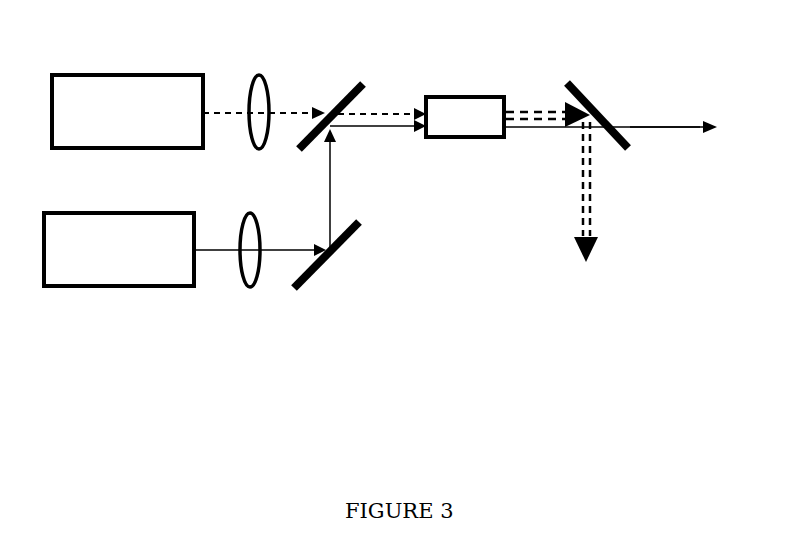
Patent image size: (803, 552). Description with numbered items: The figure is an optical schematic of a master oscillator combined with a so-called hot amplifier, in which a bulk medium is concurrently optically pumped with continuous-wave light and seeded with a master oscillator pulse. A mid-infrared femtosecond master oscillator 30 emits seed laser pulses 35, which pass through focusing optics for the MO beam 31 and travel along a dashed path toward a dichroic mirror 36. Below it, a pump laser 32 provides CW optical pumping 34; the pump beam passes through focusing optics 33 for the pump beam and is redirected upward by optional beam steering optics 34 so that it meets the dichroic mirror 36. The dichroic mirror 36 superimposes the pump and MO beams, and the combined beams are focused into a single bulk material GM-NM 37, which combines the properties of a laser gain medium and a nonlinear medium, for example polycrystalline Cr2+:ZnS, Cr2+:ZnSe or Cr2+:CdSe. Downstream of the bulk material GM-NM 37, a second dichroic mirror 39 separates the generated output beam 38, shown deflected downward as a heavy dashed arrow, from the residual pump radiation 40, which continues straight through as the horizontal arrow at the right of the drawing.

The mid-IR fs master oscillator 30 is at (131, 90).
The focusing optics for MO beam 31 is at (258, 90).
The pump laser 32 is at (132, 268).
The focusing optics for the pump beam 33 is at (250, 268).
The CW optical pumping / beam steering optics 34 is at (281, 263).
The seed laser pulses 35 is at (300, 100).
The dichroic mirror 36 is at (362, 100).
The bulk material GM-NM 37 is at (462, 125).
The output beam 38 is at (599, 194).
The dichroic mirror 39 is at (612, 146).
The residual pump radiation 40 is at (667, 120).